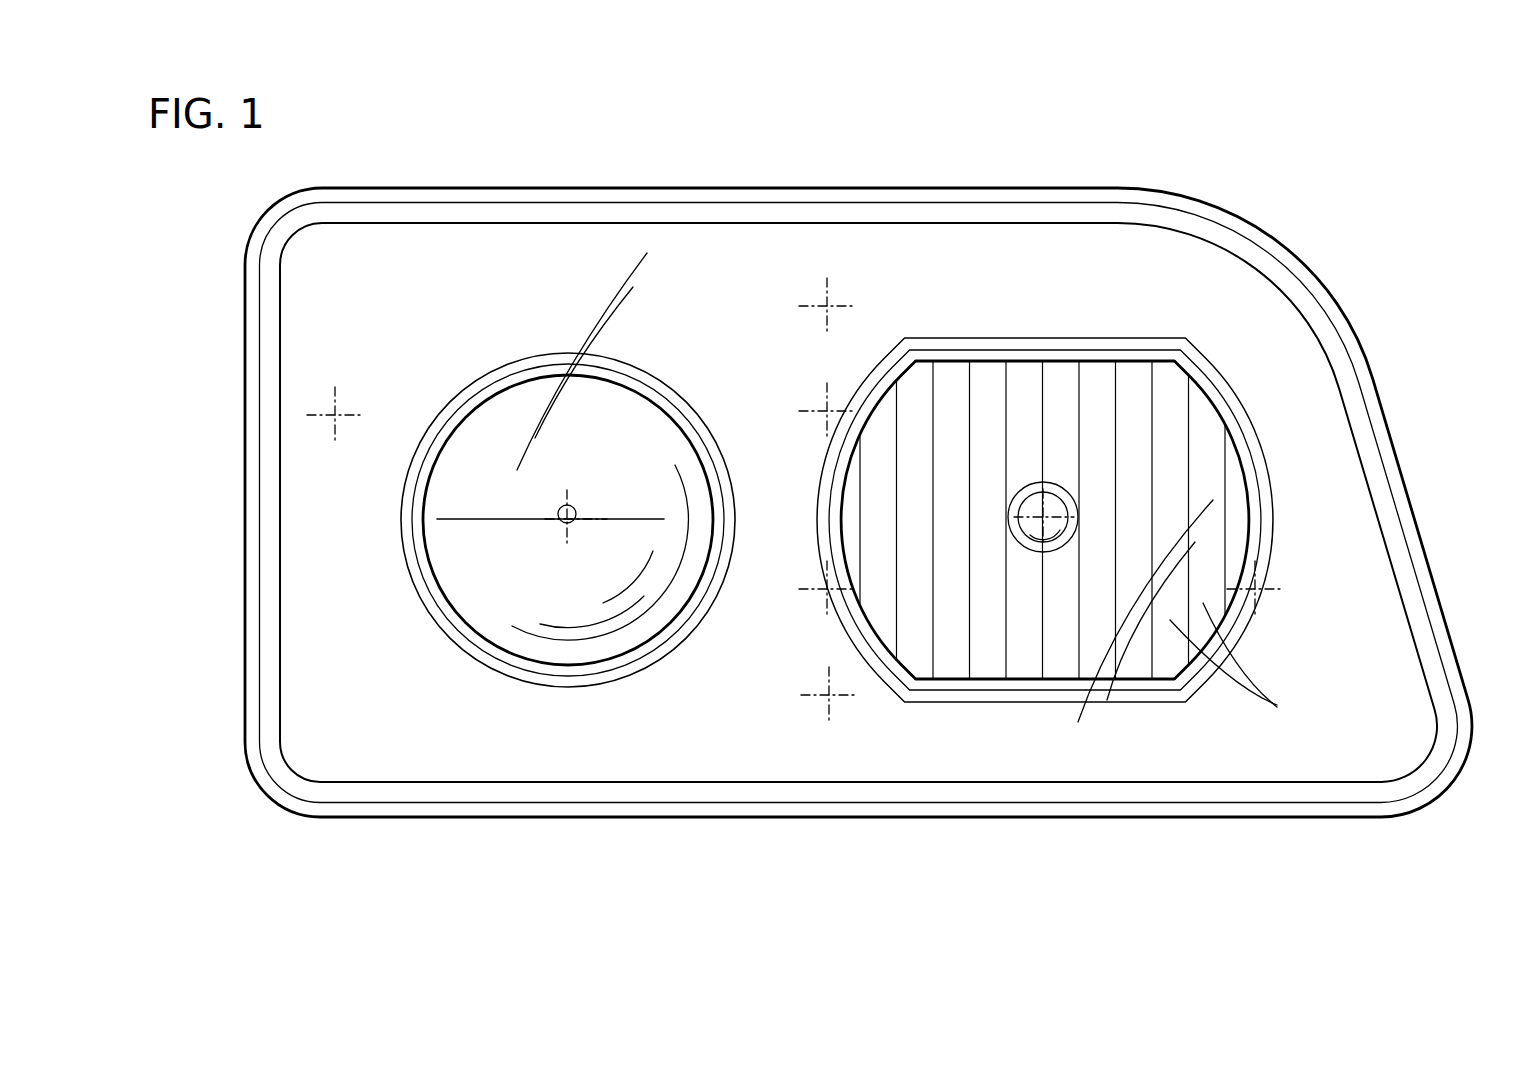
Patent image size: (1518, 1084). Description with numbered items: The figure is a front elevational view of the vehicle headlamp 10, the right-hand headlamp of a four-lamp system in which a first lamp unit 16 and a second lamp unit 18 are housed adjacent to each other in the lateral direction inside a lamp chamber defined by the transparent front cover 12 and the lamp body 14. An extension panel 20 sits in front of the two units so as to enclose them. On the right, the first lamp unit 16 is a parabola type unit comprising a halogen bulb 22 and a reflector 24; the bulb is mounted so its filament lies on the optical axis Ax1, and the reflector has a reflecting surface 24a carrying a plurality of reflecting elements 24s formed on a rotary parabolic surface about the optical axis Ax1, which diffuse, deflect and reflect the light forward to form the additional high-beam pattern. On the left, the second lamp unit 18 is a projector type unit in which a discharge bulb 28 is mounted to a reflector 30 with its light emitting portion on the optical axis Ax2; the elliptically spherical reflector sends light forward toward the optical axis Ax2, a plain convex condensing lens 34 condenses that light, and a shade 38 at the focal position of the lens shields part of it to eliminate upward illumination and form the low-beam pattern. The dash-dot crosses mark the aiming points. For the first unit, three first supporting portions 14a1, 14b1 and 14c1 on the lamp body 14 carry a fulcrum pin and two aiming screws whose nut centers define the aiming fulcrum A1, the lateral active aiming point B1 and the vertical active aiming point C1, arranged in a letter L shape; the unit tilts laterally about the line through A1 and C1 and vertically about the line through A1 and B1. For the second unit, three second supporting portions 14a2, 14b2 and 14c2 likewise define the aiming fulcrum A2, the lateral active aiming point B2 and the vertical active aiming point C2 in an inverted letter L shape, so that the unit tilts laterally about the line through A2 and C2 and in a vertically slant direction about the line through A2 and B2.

The vehicle headlamp 10 is at (1298, 193).
The transparent front cover 12 is at (1360, 432).
The lamp body 14 is at (1358, 337).
The first lamp unit 16 is at (1112, 305).
The second lamp unit 18 is at (502, 352).
The extension panel 20 is at (785, 265).
The halogen bulb 22 is at (1047, 493).
The reflector 24 is at (1193, 372).
The reflecting surface 24a is at (1173, 457).
The reflecting elements 24s is at (1202, 612).
The discharge bulb 28 is at (572, 503).
The reflector 30 is at (628, 383).
The condensing lens 34 is at (515, 603).
The shade 38 is at (507, 533).
The optical axis Ax1 is at (1020, 543).
The optical axis Ax2 is at (563, 515).
The aiming fulcrum A1 is at (826, 590).
The aiming fulcrum A2 is at (831, 698).
The active aiming point in lateral direction B1 is at (1257, 593).
The active aiming point in lateral direction B2 is at (347, 400).
The active aiming point in vertical direction C1 is at (829, 304).
The active aiming point in vertical direction C2 is at (825, 408).
The first supporting portion 14a1 is at (779, 624).
The second supporting portion 14a2 is at (910, 714).
The first supporting portion 14b1 is at (1300, 621).
The second supporting portion 14b2 is at (381, 380).
The first supporting portion 14c1 is at (871, 288).
The second supporting portion 14c2 is at (779, 391).